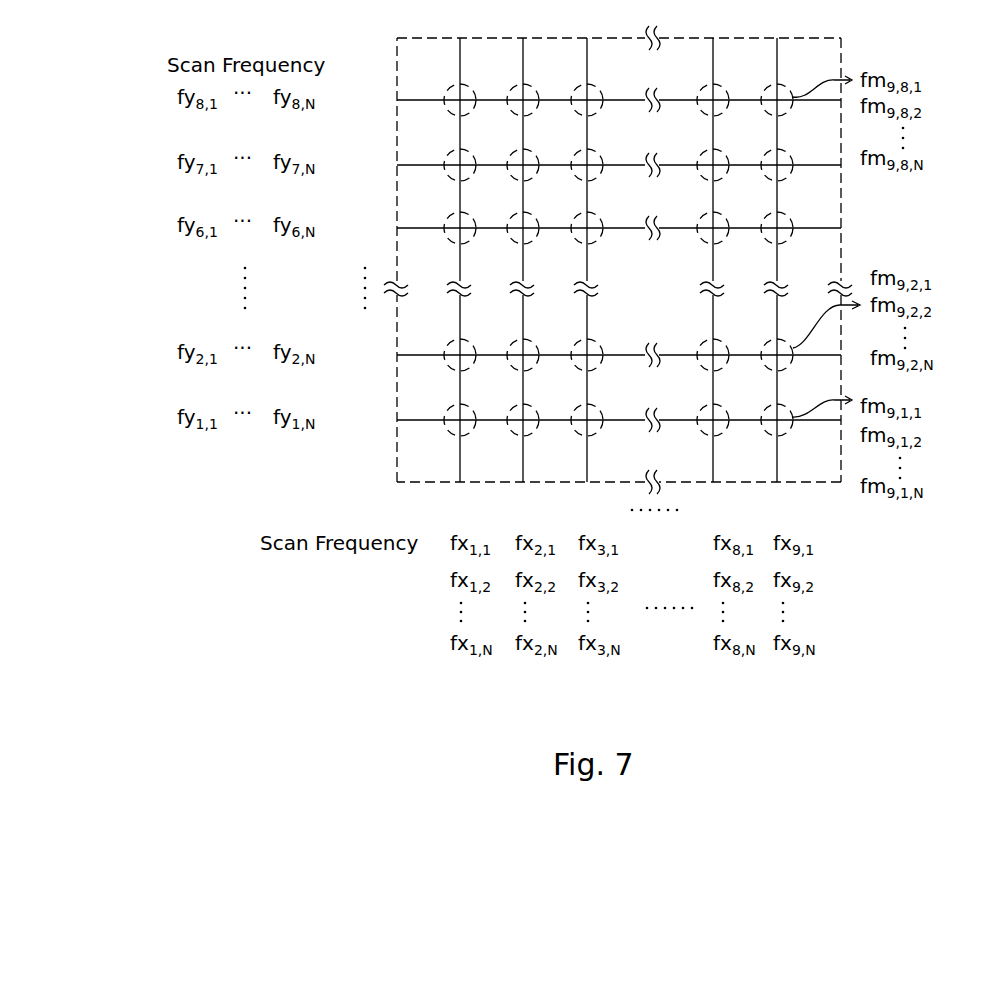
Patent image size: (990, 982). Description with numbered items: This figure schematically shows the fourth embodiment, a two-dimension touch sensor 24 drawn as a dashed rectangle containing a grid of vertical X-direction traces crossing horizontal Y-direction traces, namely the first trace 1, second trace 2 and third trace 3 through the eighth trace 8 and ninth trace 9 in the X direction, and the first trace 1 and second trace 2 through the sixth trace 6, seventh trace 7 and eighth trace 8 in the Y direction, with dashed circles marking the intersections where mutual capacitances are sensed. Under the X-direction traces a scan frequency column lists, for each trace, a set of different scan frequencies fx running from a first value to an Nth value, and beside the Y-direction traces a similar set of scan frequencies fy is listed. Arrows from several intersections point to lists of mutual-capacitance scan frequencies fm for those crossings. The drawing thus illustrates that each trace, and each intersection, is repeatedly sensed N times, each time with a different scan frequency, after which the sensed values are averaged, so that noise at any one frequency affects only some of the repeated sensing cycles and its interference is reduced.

The sensing grid / electrode array 24 is at (634, 274).
The X-direction trace X1 / Y-direction trace Y1 1 is at (597, 280).
The X-direction trace X2 / Y-direction trace Y2 2 is at (597, 280).
The X-direction trace X3 3 is at (591, 280).
The Y-direction trace Y6 6 is at (597, 226).
The Y-direction trace Y7 7 is at (597, 163).
The X-direction trace X8 / Y-direction trace Y8 8 is at (597, 280).
The X-direction trace X9 9 is at (781, 280).